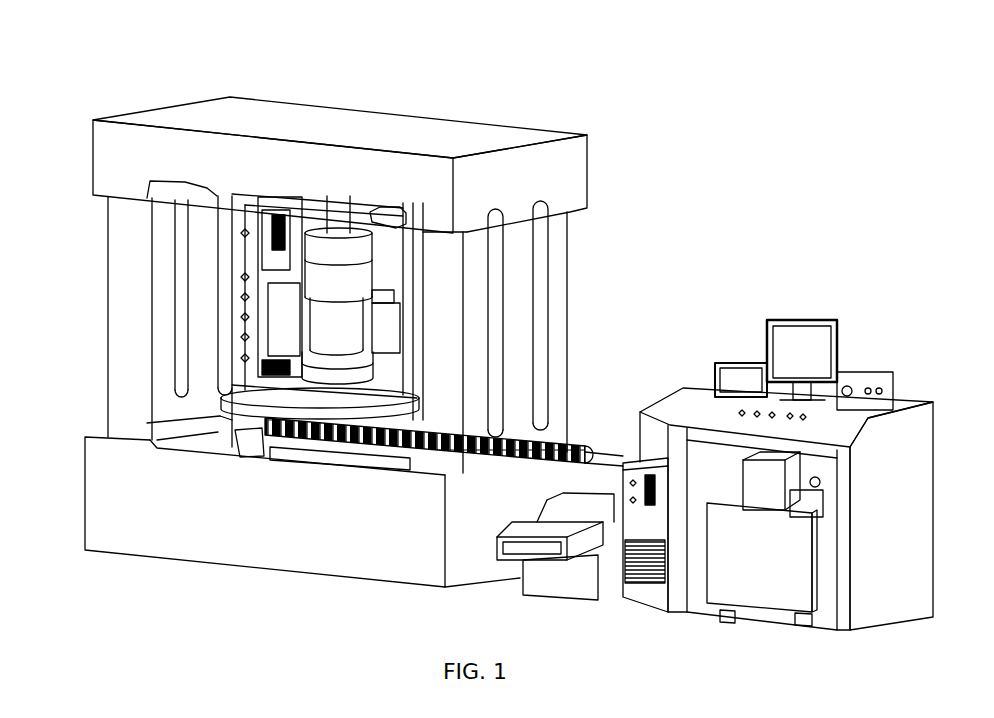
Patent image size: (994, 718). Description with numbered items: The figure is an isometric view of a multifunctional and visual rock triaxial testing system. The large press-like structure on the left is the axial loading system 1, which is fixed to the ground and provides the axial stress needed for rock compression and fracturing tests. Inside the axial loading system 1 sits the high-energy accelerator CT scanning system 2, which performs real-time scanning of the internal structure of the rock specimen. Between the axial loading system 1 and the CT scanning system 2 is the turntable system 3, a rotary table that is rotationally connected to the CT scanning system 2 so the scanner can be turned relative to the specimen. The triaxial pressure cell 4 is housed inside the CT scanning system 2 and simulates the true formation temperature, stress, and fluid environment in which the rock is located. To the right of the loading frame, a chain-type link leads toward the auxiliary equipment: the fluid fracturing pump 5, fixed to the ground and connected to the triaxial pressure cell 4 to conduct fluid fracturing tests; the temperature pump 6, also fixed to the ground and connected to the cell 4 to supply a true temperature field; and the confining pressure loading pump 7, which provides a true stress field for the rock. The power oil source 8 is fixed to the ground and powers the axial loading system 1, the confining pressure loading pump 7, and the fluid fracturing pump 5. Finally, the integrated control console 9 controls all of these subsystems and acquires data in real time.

The axial loading system 1 is at (128, 392).
The high-energy accelerator CT scanning system 2 is at (387, 328).
The turntable system 3 is at (250, 421).
The triaxial pressure cell 4 is at (320, 306).
The fluid fracturing pump 5 is at (527, 545).
The temperature pump 6 is at (640, 528).
The confining pressure loading pump 7 is at (652, 440).
The power oil source 8 is at (767, 525).
The integrated control console 9 is at (876, 440).